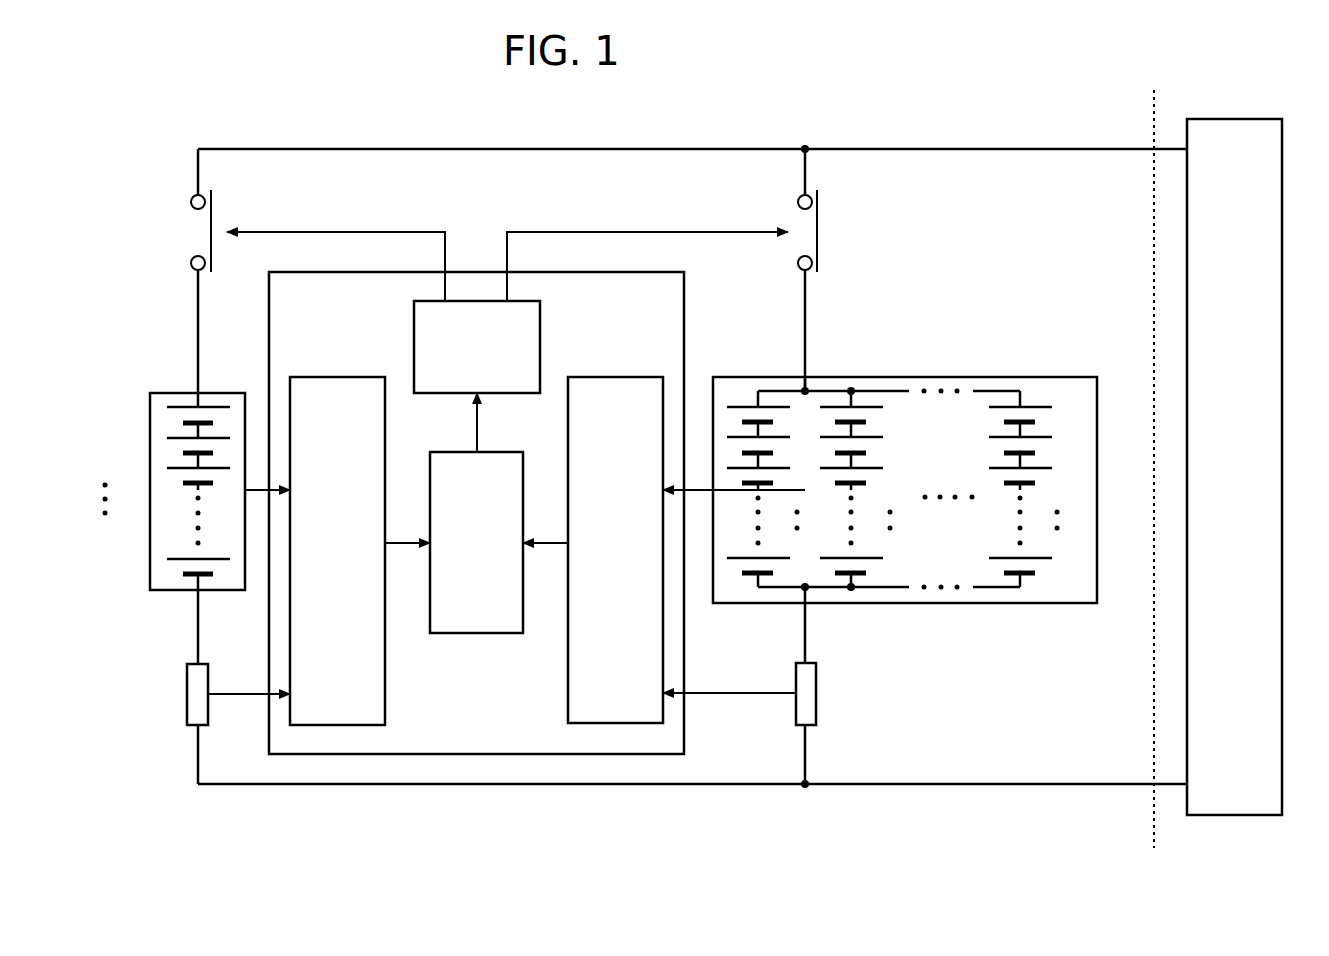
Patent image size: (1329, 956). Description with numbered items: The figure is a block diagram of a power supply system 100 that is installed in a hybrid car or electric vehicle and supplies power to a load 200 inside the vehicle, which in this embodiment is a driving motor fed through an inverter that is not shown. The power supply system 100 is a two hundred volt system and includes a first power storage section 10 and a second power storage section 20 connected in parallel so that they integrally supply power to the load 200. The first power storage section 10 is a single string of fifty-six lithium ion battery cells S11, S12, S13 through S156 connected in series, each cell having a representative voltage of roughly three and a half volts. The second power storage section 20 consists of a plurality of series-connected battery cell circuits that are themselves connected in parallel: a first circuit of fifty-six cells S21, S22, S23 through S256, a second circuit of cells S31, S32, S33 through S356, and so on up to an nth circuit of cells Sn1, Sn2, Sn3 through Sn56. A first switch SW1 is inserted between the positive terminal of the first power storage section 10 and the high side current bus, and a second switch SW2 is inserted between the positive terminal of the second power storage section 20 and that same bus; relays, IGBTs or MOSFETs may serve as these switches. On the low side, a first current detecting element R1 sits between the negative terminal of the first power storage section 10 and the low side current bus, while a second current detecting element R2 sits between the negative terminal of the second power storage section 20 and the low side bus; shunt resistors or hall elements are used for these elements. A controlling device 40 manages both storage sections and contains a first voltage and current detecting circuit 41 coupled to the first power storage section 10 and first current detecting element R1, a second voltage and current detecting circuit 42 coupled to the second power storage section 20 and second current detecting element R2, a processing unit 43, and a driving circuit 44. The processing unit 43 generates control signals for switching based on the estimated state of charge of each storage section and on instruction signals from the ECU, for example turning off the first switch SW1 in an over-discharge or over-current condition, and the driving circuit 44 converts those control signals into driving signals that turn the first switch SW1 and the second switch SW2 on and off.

The power supply system 100 is at (697, 117).
The load inside a vehicle 200 is at (1237, 119).
The first power storage section 10 is at (168, 462).
The second power storage section 20 is at (905, 461).
The controlling device 40 is at (685, 318).
The first voltage and current detecting circuit 41 is at (343, 377).
The second voltage and current detecting circuit 42 is at (617, 377).
The processing unit 43 is at (500, 452).
The driving circuit 44 is at (525, 301).
The first switch SW1 is at (170, 271).
The second switch SW2 is at (835, 270).
The first current detecting element R1 is at (203, 664).
The second current detecting element R2 is at (811, 663).
The lithium ion battery cell S11 is at (168, 420).
The lithium ion battery cell S12 is at (168, 451).
The lithium ion battery cell S13 is at (168, 481).
The lithium ion battery cell S156 is at (168, 568).
The lithium ion battery cell S21 is at (769, 418).
The lithium ion battery cell S22 is at (769, 449).
The lithium ion battery cell S23 is at (769, 479).
The lithium ion battery cell S256 is at (771, 552).
The lithium ion battery cell S31 is at (862, 418).
The lithium ion battery cell S32 is at (862, 449).
The lithium ion battery cell S33 is at (862, 479).
The lithium ion battery cell S356 is at (864, 552).
The lithium ion battery cell Sn1 is at (1030, 418).
The lithium ion battery cell Sn2 is at (1030, 449).
The lithium ion battery cell Sn3 is at (1030, 479).
The lithium ion battery cell Sn56 is at (1032, 552).